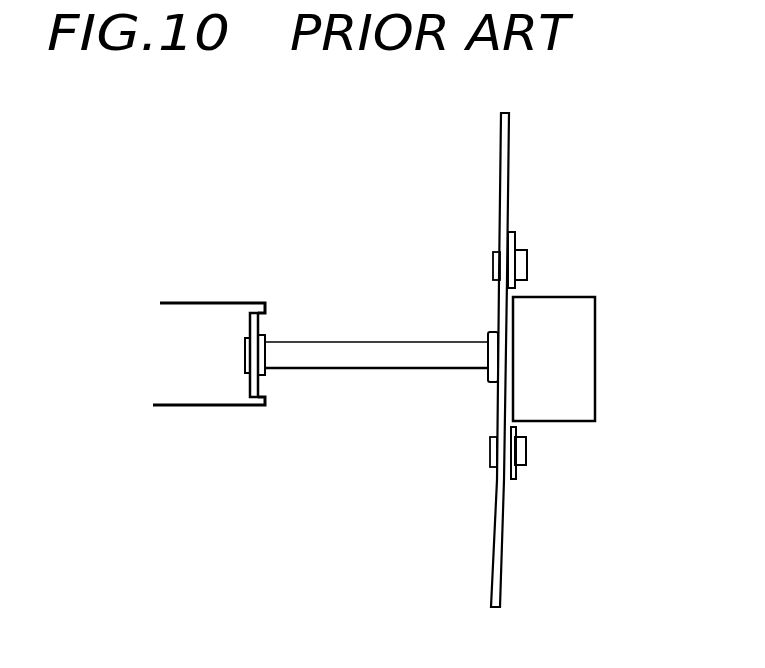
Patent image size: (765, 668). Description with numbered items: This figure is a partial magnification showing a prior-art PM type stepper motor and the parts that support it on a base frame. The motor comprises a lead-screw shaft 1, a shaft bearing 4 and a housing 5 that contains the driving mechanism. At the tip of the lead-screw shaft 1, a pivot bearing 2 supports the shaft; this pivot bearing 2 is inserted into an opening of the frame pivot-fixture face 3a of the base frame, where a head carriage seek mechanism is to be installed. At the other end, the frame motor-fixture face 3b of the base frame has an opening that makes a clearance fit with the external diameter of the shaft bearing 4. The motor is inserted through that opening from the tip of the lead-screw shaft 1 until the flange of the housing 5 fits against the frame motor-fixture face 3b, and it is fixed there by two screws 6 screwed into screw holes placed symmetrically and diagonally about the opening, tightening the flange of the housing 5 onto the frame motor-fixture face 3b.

The lead-screw shaft 1 is at (350, 358).
The pivot bearing 2 is at (248, 360).
The frame pivot-fixture face 3a is at (258, 326).
The frame motor-fixture face 3b is at (502, 233).
The shaft bearing 4 is at (487, 378).
The housing 5 is at (578, 318).
The screws 6 is at (520, 262).